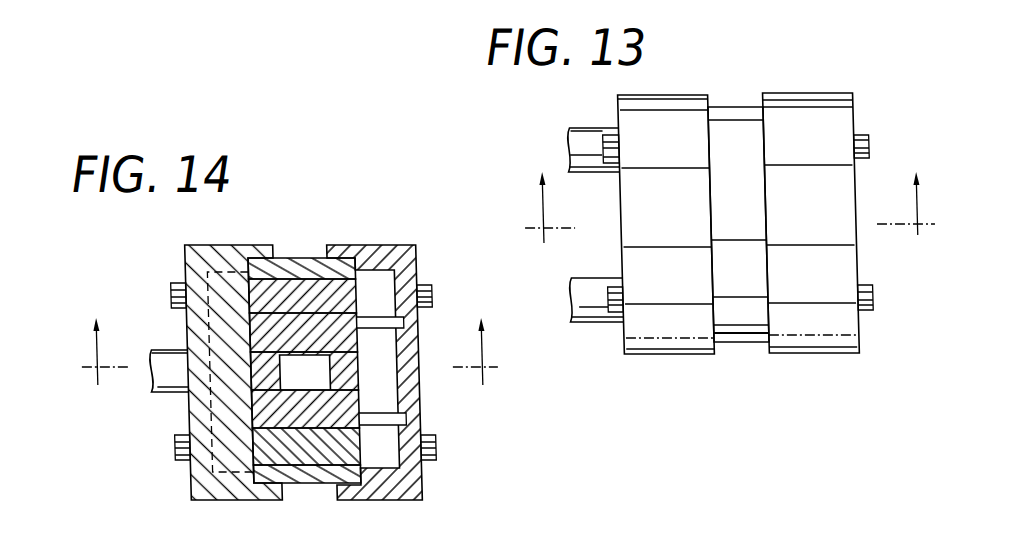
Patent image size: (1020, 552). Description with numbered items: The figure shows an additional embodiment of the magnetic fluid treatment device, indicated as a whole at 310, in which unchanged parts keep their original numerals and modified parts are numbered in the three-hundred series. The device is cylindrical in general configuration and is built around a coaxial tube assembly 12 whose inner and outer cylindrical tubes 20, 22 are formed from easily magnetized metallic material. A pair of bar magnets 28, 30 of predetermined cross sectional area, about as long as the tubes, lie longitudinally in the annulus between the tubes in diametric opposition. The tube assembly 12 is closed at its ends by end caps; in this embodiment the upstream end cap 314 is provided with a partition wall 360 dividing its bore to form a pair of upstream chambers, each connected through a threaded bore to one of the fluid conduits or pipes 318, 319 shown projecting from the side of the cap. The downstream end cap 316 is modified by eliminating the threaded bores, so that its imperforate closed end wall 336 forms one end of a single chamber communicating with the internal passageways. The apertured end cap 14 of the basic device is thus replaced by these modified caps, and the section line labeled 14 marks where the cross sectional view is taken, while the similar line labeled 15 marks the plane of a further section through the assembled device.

In FIG. 13, the coaxial tube assembly 12 is at (743, 94).
In FIG. 13, the additional embodiment of the structure 310 is at (779, 78).
In FIG. 13, the fluid conduit or pipe 319 is at (598, 128).
In FIG. 14, the fluid conduit or pipe 319 is at (162, 390).
In FIG. 13, the fluid conduit or pipe 318 is at (594, 322).
In FIG. 13, the apertured end cap 14 is at (731, 217).
In FIG. 14, the end cap 314 is at (218, 245).
In FIG. 14, the downstream end cap 316 is at (371, 245).
In FIG. 14, the bar magnet 28 is at (310, 292).
In FIG. 14, the inner cylindrical tube 20 is at (348, 342).
In FIG. 14, the outer cylindrical tube 22 is at (307, 483).
In FIG. 14, the bar magnet 30 is at (335, 452).
In FIG. 14, the imperforate closed end wall 336 is at (422, 398).
In FIG. 14, the partition wall 360 is at (228, 425).
In FIG. 14, the section line 15- 15 is at (292, 358).